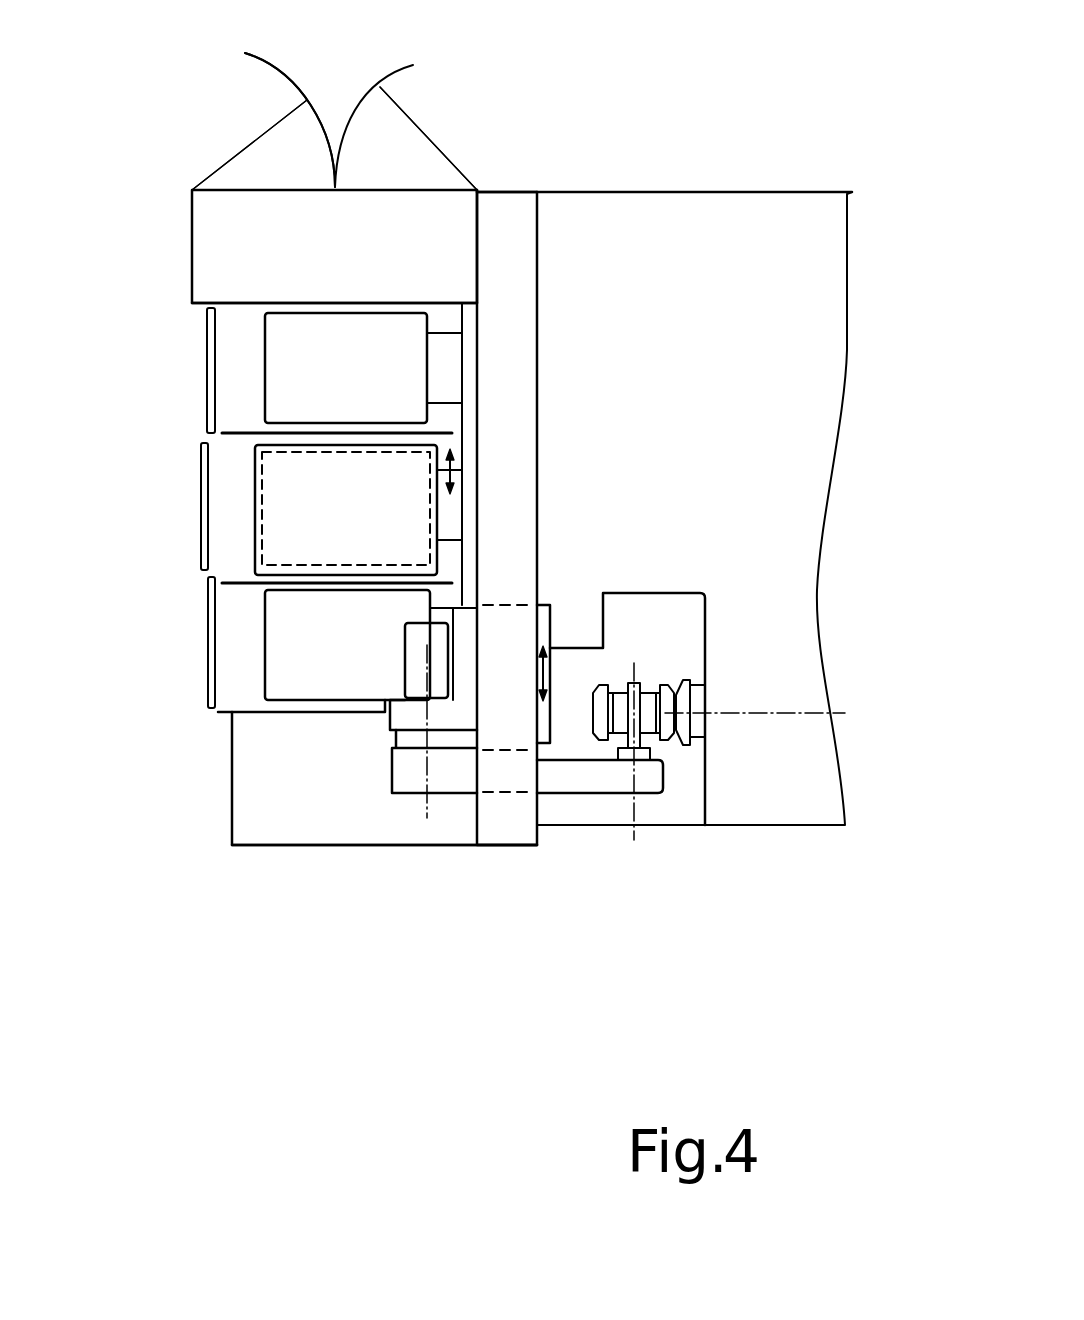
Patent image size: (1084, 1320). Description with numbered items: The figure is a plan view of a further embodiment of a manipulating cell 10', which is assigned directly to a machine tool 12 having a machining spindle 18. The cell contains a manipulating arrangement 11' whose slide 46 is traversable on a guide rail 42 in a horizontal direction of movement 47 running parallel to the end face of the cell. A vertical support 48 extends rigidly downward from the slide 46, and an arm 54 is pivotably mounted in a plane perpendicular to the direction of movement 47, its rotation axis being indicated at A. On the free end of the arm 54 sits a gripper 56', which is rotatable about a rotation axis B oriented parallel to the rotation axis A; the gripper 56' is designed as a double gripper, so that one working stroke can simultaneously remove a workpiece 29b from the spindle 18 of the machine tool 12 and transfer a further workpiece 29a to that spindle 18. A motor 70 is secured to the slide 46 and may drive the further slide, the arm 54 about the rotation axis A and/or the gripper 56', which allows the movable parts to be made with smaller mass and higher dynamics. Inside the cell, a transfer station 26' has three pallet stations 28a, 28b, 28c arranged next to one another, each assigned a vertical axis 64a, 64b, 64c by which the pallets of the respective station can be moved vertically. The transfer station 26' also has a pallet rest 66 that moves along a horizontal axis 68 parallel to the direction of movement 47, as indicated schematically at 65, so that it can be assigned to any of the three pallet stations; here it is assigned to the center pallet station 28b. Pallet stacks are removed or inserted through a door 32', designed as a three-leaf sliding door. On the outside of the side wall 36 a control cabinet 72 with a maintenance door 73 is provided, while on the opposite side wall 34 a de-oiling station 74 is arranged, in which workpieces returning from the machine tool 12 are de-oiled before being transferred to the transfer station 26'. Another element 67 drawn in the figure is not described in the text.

The manipulating cell 10' is at (275, 129).
The manipulating arrangement 11' is at (494, 930).
The machine tool 12 is at (818, 283).
The machining spindle 18 is at (693, 698).
The transfer station 26' is at (161, 613).
The pallet station 28a is at (290, 358).
The pallet station 28b is at (262, 522).
The pallet station 28c is at (290, 657).
The workpiece 29a is at (607, 690).
The workpiece 29b is at (683, 688).
The door 32' is at (148, 370).
The side wall 34 is at (252, 713).
The side wall 36 is at (227, 303).
The guide rail 42 is at (498, 207).
The slide 46 is at (463, 710).
The direction of movement 47 is at (552, 682).
The vertical support 48 is at (403, 717).
The arm 54 is at (603, 777).
The gripper 56' is at (666, 770).
The vertical axis 64a is at (450, 353).
The vertical axis 64b is at (455, 513).
The vertical axis 64c is at (455, 610).
The horizontal movement of the pallet rest 65 is at (457, 463).
The pallet rest 66 is at (257, 478).
The guide rails 67 is at (232, 435).
The horizontal axis 68 is at (463, 423).
The motor 70 is at (427, 660).
The control cabinet 72 is at (228, 230).
The door 73 is at (415, 120).
The de-oiling station 74 is at (253, 793).
The rotation axis A is at (427, 800).
The rotation axis B is at (634, 813).